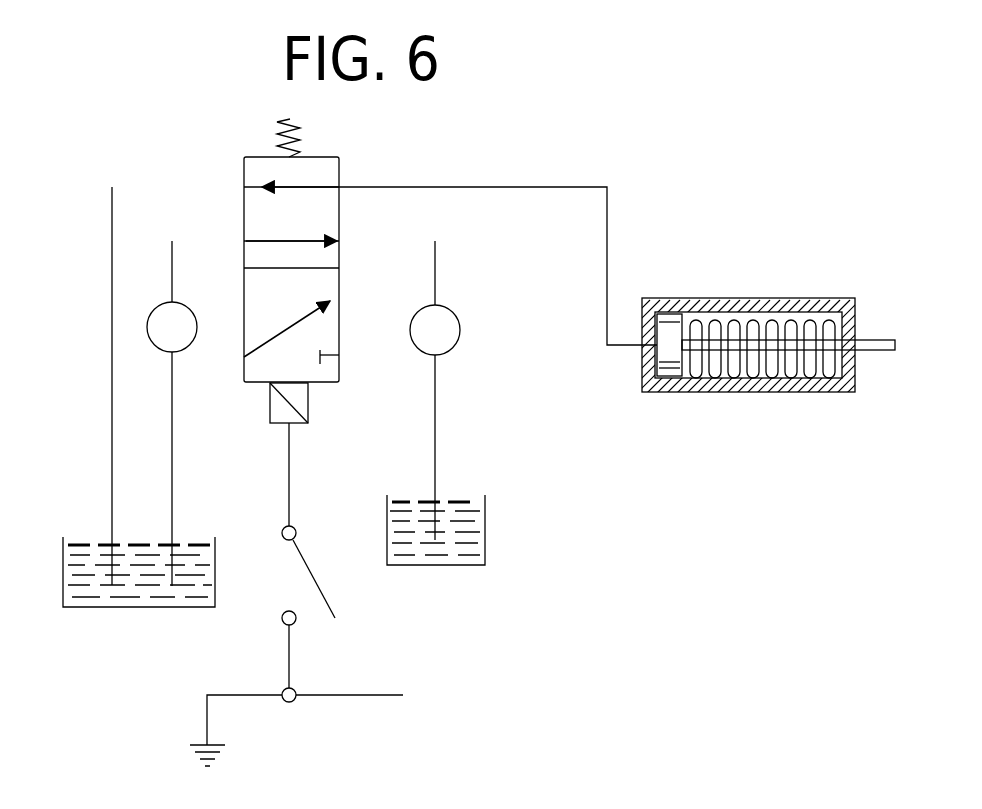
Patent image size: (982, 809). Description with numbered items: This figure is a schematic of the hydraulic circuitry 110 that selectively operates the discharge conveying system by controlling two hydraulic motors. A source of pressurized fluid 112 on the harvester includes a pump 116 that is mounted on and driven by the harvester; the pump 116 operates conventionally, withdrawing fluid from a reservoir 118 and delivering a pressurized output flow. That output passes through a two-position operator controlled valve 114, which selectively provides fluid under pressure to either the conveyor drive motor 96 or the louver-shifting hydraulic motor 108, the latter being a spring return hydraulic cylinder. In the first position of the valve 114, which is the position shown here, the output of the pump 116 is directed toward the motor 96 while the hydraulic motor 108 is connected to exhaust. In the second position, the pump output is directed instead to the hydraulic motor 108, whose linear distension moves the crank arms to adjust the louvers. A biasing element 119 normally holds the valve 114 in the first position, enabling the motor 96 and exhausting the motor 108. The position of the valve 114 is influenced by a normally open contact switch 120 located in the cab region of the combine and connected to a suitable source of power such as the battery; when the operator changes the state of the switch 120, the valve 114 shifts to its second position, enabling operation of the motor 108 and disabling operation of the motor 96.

The motor 96 is at (461, 330).
The hydraulic motor 108 is at (770, 305).
The hydraulic circuitry 110 is at (648, 197).
The source of pressurized fluid 112 is at (154, 346).
The two-position operator controlled valve 114 is at (348, 368).
The pump 116 is at (155, 313).
The reservoir 118 is at (80, 548).
The biasing element 119 is at (298, 135).
The normally open contact switch 120 is at (318, 583).